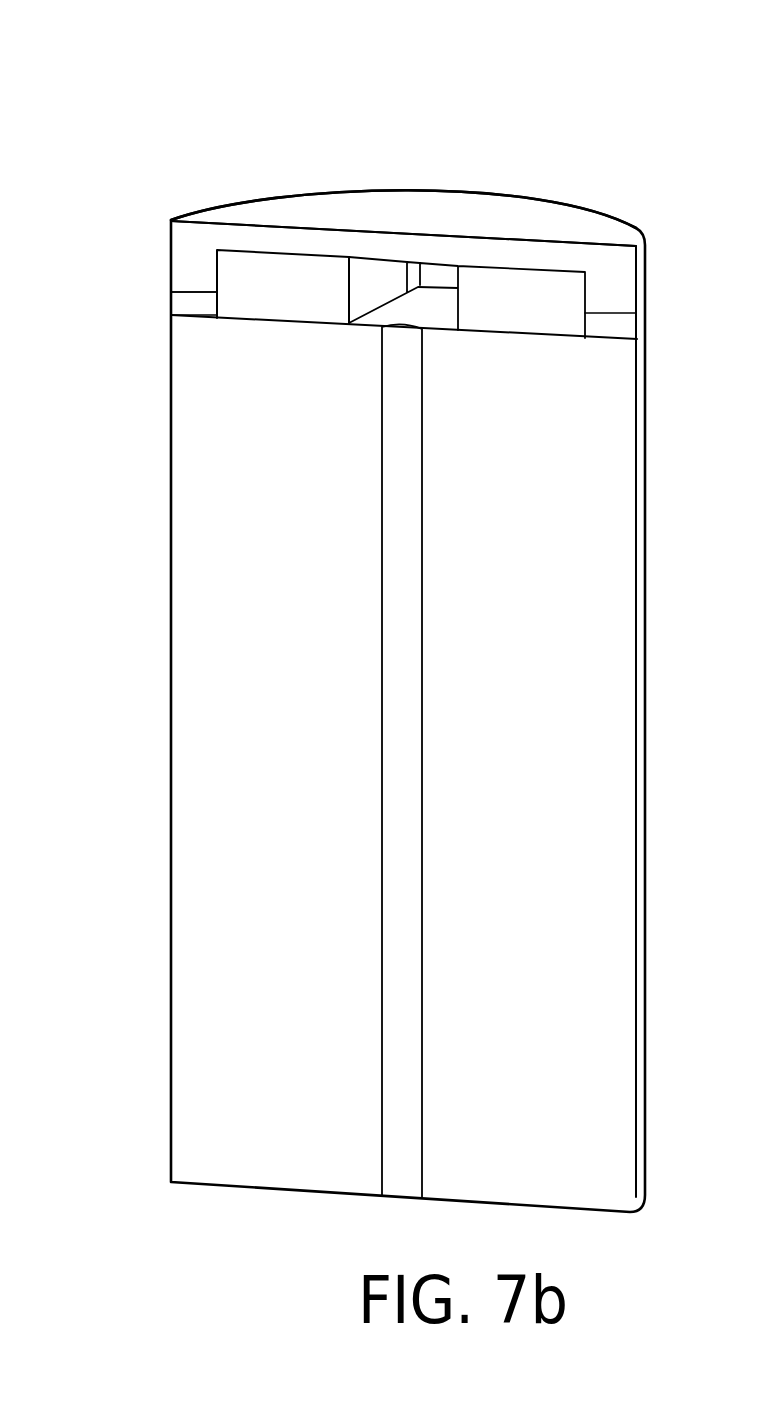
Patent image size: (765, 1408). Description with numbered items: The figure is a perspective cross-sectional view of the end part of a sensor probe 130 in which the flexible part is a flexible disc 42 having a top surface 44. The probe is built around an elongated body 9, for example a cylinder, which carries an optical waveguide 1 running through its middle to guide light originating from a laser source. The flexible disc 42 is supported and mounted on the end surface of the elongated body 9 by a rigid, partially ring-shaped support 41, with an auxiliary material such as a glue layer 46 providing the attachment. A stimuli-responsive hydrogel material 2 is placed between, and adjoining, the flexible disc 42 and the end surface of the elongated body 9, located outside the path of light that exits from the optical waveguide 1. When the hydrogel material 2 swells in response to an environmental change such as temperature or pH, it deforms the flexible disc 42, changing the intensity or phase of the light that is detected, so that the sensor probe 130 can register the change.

The sensor probe 130 is at (127, 95).
The optical waveguide 1 is at (393, 602).
The stimuli-responsive hydrogel material 2 is at (262, 288).
The elongated body 9 is at (180, 630).
The rigid partially ring-shaped support 41 is at (183, 260).
The flexible disc 42 is at (300, 228).
The top surface 44 is at (431, 217).
The glue layer 46 is at (183, 303).